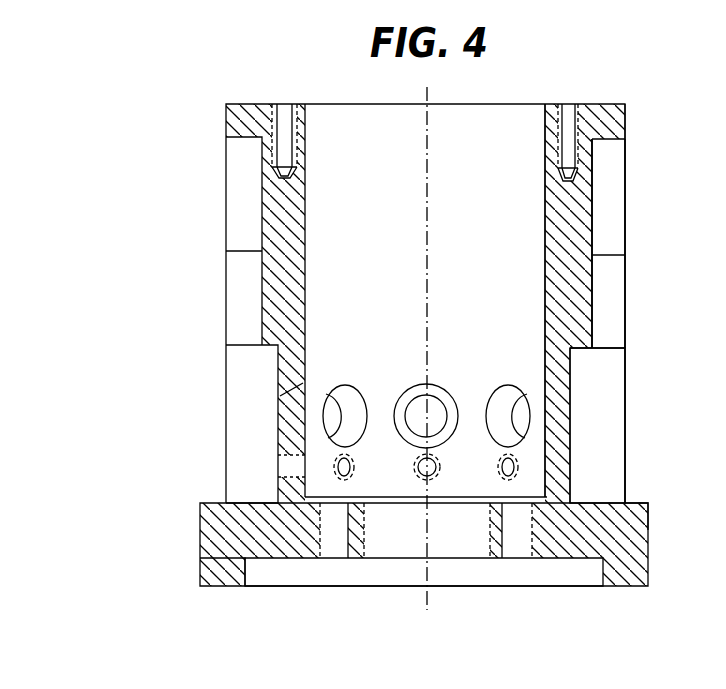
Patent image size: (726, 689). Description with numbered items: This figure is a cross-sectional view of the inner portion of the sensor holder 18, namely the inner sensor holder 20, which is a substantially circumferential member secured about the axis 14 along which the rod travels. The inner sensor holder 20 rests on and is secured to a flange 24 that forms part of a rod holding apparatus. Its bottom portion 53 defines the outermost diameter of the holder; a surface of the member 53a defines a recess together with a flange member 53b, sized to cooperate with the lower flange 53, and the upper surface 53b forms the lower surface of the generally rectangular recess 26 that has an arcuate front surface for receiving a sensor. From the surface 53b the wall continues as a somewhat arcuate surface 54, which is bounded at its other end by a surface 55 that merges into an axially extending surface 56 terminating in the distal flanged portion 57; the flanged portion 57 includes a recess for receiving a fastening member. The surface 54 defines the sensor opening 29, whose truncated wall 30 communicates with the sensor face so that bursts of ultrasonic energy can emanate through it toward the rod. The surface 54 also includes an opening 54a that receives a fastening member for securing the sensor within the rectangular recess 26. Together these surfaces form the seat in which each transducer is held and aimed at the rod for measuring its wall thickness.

The axis 14 is at (429, 100).
The sensor holder 18 is at (418, 531).
The inner sensor holder 20 is at (170, 358).
The flange 24 is at (277, 574).
The rectangular recess 26 is at (623, 303).
The opening 29 is at (287, 418).
The truncated wall 30 is at (347, 398).
The bottom portion 53 is at (622, 553).
The member surface 53a is at (202, 570).
The flange member 53b is at (628, 512).
The surface 54 is at (572, 392).
The opening 54a is at (290, 464).
The surface 55 is at (566, 340).
The axially extending surface 56 is at (596, 166).
The distal flanged portion 57 is at (607, 116).